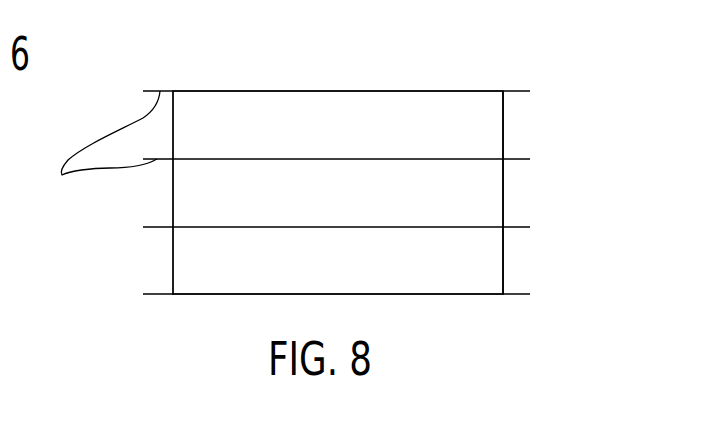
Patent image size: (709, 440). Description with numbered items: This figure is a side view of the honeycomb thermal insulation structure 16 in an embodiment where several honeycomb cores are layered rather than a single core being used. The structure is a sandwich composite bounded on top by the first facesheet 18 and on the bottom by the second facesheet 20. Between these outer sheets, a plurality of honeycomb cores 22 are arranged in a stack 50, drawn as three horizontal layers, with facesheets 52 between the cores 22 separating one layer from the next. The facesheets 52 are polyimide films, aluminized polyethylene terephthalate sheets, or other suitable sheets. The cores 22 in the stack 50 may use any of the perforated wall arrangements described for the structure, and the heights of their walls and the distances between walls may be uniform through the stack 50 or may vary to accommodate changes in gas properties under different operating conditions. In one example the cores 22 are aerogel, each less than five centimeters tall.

The honeycomb thermal insulation structure 16 is at (272, 52).
The first facesheet 18 is at (412, 91).
The second facesheet 20 is at (450, 295).
The honeycomb core 22 is at (503, 127).
The stack 50 is at (640, 172).
The facesheets 52 is at (103, 150).